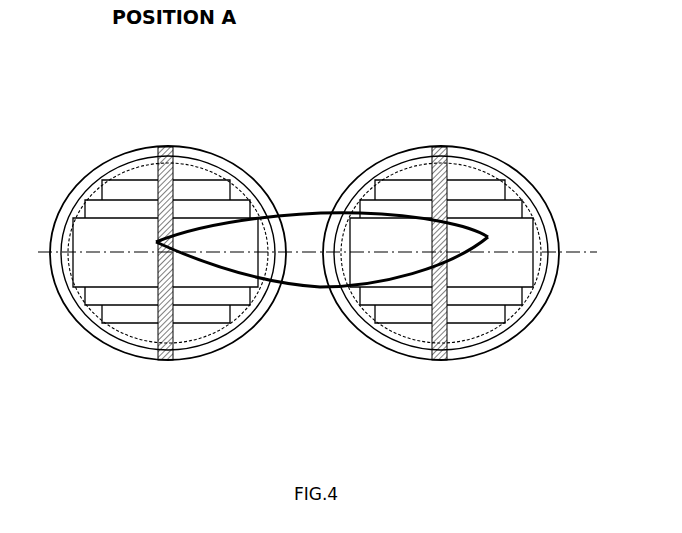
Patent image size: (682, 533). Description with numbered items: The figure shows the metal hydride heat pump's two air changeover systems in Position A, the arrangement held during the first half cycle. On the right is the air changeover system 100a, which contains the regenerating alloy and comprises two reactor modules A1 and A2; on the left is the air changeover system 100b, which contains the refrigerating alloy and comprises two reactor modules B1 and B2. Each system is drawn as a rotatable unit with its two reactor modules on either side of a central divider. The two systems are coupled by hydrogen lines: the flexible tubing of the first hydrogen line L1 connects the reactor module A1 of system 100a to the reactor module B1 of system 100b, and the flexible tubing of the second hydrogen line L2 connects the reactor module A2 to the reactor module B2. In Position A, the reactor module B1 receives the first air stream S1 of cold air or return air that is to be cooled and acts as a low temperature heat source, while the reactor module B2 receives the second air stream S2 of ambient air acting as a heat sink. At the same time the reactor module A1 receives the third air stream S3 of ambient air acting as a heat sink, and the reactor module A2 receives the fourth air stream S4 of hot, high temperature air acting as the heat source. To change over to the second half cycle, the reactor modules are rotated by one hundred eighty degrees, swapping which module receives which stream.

The air changeover system 100a is at (513, 108).
The air changeover system 100b is at (240, 109).
The air stream 1 S1 is at (83, 167).
The air stream 2 S2 is at (247, 166).
The air stream 3 S3 is at (389, 354).
The air stream 4 S4 is at (538, 334).
The hydrogen Line 1 L1 is at (321, 207).
The hydrogen Line 2 L2 is at (302, 296).
The reactor module A1 is at (391, 251).
The reactor module A2 is at (490, 251).
The reactor module B1 is at (115, 251).
The reactor module B2 is at (215, 251).